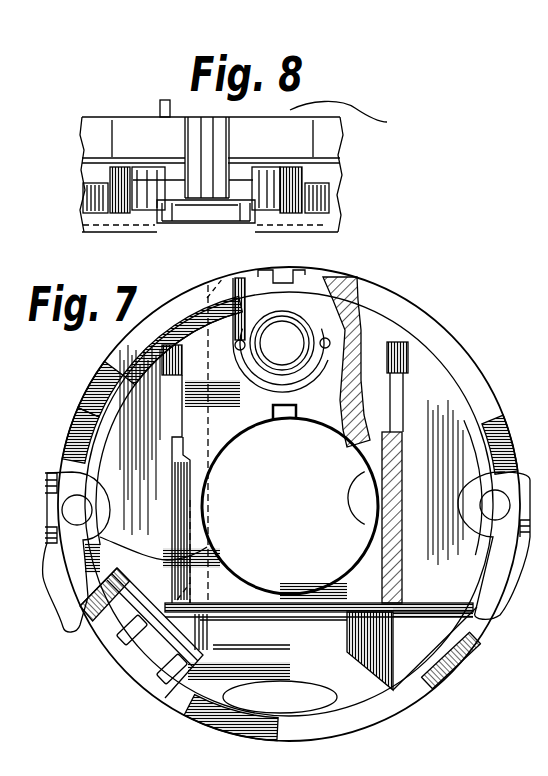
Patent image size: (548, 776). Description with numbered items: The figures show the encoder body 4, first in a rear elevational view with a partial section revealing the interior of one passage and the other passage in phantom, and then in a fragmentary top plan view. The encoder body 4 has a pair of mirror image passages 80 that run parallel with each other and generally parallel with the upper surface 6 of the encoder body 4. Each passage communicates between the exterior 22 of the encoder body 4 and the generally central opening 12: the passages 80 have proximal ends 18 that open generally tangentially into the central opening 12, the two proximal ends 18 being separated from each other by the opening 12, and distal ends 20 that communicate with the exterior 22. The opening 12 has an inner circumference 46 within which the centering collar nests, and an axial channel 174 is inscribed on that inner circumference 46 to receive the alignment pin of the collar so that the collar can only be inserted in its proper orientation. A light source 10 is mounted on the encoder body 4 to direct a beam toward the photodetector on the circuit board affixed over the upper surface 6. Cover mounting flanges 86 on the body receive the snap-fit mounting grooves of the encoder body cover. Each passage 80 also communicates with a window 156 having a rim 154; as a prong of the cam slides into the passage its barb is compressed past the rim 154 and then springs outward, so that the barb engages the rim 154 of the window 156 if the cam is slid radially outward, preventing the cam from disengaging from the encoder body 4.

In FIG. 7, the encoder body 4 is at (462, 341).
In FIG. 8, the upper surface 6 is at (242, 166).
In FIG. 7, the light source 10 is at (273, 283).
In FIG. 7, the central opening 12 is at (362, 452).
In FIG. 7, the proximal ends 18 is at (127, 663).
In FIG. 7, the distal ends 20 is at (147, 312).
In FIG. 7, the exterior 22 is at (132, 350).
In FIG. 7, the inner circumference 46 is at (407, 475).
In FIG. 8, the passages 80 is at (118, 203).
In FIG. 7, the cover mounting flanges 86 is at (70, 625).
In FIG. 7, the rim 154 is at (182, 378).
In FIG. 7, the window 156 is at (182, 418).
In FIG. 7, the axial channel 174 is at (343, 473).